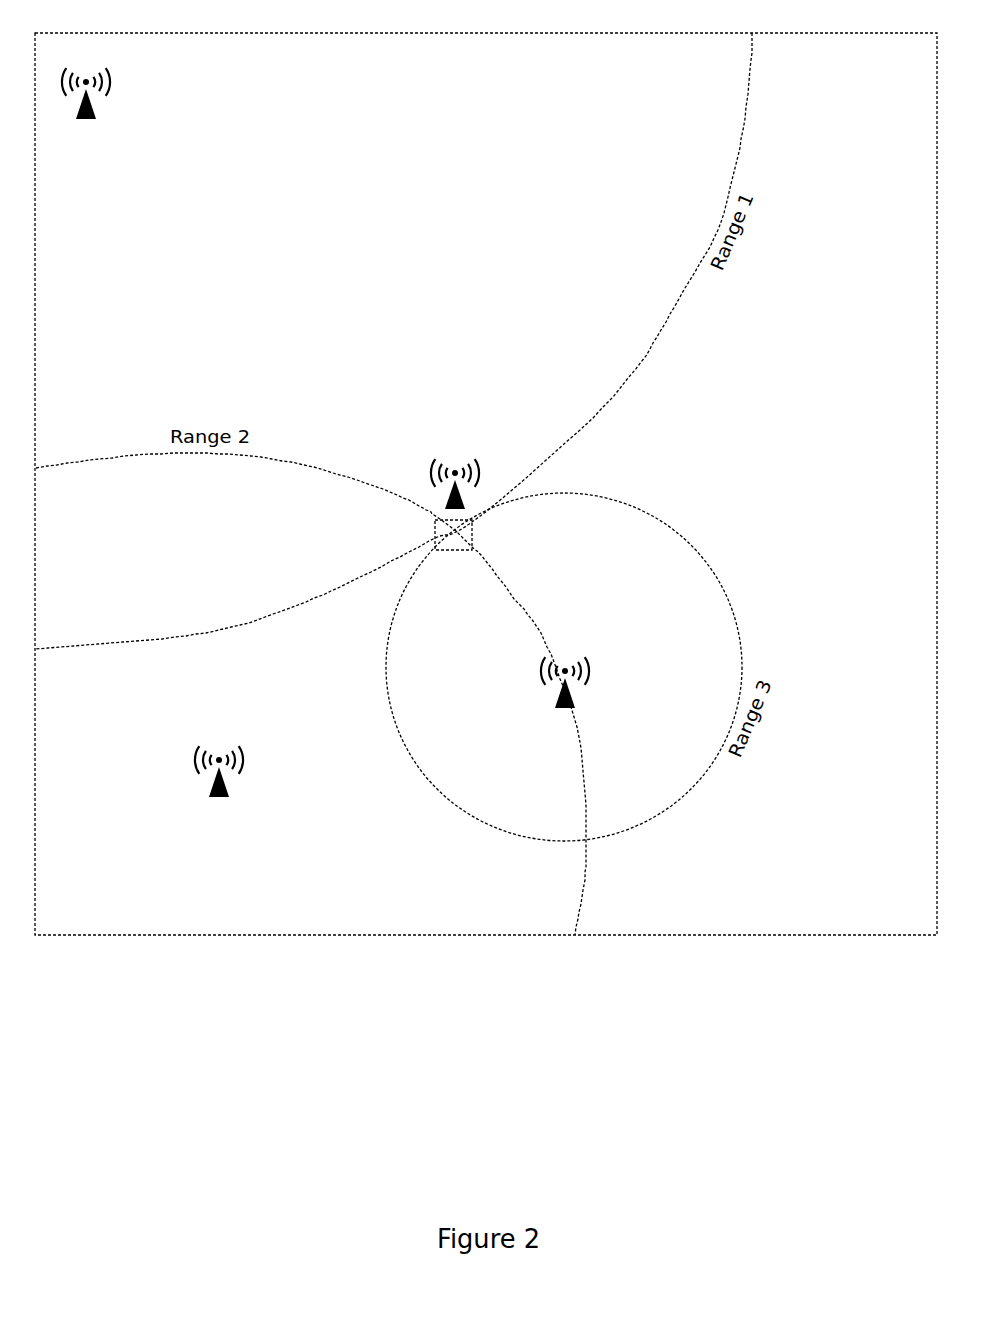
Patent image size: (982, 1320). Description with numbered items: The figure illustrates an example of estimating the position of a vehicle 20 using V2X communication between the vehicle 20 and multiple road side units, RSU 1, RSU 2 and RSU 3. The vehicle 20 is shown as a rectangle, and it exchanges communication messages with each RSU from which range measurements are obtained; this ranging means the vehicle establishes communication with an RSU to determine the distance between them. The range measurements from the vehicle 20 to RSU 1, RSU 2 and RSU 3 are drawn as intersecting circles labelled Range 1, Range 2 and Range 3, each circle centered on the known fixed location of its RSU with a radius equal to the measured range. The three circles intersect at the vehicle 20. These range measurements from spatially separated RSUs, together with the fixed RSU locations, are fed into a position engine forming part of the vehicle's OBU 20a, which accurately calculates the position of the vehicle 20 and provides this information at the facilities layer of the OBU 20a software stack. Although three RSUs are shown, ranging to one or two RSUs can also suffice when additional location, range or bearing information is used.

The vehicle 20 is at (472, 540).
The OBU 20a is at (452, 456).
The RSU1 / Range 1 is at (92, 81).
The RSU2 / Range 2 is at (222, 754).
The RSU3 / Range 3 is at (563, 671).